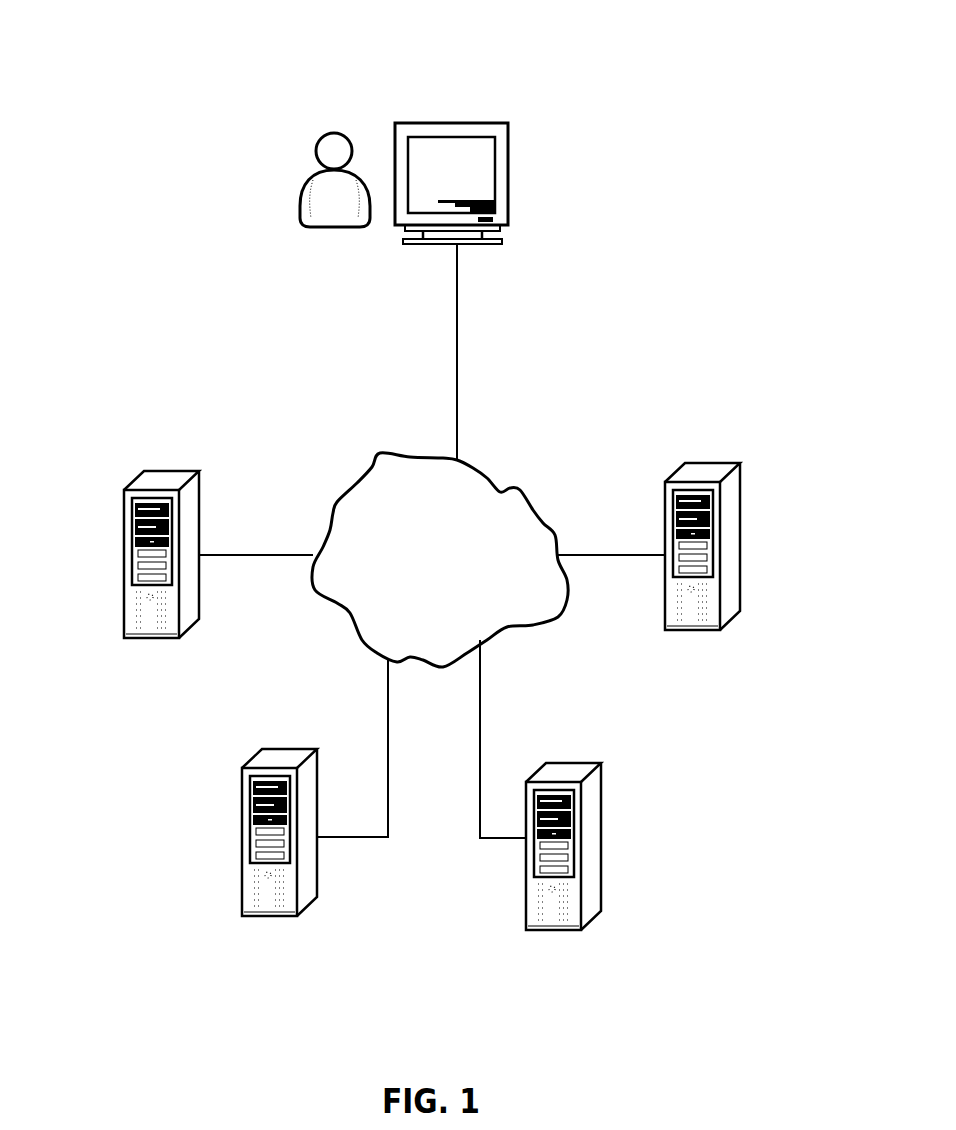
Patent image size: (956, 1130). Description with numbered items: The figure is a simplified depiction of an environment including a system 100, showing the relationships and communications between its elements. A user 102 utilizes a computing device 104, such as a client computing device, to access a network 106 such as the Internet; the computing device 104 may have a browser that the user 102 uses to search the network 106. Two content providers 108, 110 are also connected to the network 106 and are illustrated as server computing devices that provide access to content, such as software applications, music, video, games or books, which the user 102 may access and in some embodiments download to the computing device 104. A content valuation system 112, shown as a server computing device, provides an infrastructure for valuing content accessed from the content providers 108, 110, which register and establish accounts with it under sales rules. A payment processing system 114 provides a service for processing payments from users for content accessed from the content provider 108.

The system 100 is at (676, 62).
The user 102 is at (343, 128).
The computing device 104 is at (500, 123).
The network 106 is at (477, 473).
The content provider 108 is at (170, 472).
The content provider 110 is at (722, 463).
The content valuation system 112 is at (300, 750).
The payment processing system 114 is at (585, 763).